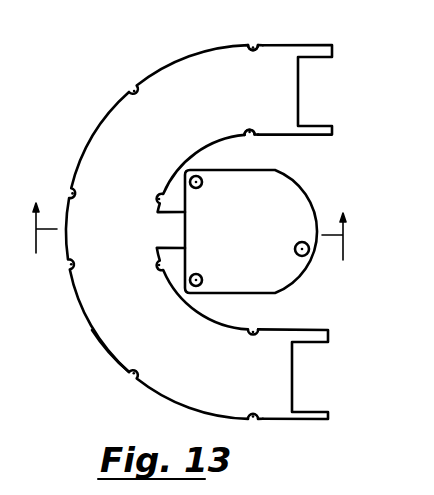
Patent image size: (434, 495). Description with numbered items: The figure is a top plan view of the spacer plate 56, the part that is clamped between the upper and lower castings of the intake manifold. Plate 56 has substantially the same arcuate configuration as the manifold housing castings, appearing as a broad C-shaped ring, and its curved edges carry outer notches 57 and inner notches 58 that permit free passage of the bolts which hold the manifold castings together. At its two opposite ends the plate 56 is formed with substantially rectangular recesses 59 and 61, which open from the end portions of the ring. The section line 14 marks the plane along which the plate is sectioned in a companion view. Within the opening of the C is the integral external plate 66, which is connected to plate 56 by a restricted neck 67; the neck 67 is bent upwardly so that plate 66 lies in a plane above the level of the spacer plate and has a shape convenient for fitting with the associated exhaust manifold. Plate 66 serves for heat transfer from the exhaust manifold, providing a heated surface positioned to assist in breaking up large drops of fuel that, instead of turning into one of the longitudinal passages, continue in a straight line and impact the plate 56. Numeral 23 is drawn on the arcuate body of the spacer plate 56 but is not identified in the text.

The section line 14 is at (185, 244).
The housing ring 23 is at (119, 351).
The spacer plate 56 is at (183, 51).
The outer notches 57 is at (259, 46).
The inner notches 58 is at (255, 139).
The rectangular recess 59 is at (300, 100).
The rectangular recess 61 is at (293, 380).
The integral external plate 66 is at (305, 196).
The restricted neck 67 is at (186, 212).